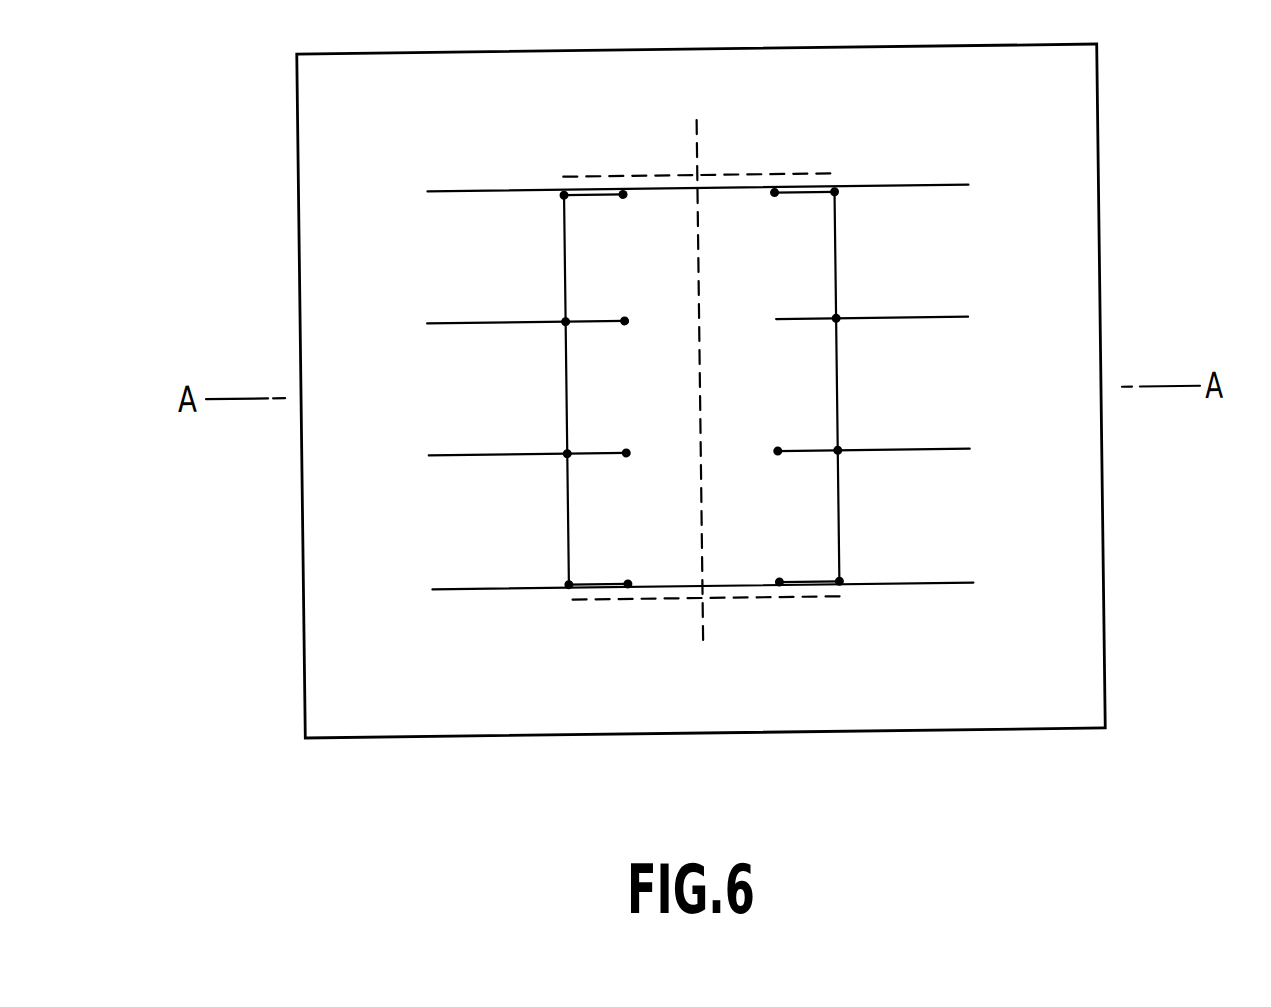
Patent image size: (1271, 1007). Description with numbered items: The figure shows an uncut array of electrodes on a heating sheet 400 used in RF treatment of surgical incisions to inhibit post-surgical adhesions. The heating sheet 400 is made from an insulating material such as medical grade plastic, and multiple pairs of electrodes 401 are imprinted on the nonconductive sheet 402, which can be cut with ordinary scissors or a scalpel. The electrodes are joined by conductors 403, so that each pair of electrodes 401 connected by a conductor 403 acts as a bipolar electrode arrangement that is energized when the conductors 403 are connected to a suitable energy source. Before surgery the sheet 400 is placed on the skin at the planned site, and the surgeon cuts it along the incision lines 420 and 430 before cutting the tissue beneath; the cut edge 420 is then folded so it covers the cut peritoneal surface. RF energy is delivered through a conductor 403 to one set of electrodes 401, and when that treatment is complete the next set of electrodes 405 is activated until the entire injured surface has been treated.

The heating sheet 400 is at (1126, 163).
The electrodes 401 is at (625, 318).
The nonconductive sheet 402 is at (381, 688).
The conductors 403 is at (908, 188).
The next set of electrodes 405 is at (777, 450).
The incision line 420 is at (700, 636).
The incision line 430 is at (768, 599).